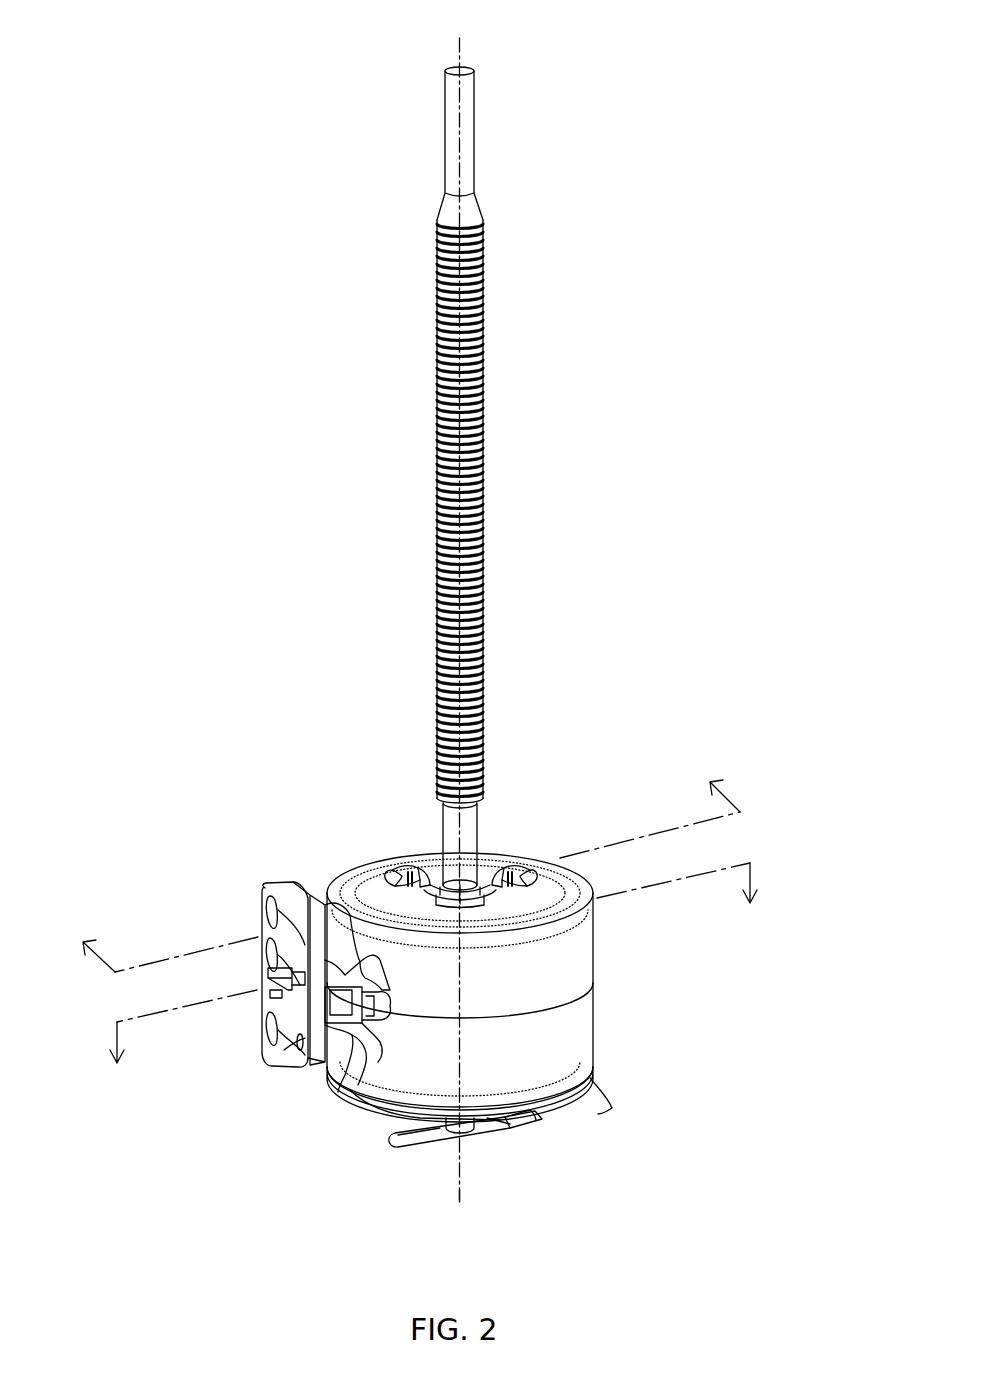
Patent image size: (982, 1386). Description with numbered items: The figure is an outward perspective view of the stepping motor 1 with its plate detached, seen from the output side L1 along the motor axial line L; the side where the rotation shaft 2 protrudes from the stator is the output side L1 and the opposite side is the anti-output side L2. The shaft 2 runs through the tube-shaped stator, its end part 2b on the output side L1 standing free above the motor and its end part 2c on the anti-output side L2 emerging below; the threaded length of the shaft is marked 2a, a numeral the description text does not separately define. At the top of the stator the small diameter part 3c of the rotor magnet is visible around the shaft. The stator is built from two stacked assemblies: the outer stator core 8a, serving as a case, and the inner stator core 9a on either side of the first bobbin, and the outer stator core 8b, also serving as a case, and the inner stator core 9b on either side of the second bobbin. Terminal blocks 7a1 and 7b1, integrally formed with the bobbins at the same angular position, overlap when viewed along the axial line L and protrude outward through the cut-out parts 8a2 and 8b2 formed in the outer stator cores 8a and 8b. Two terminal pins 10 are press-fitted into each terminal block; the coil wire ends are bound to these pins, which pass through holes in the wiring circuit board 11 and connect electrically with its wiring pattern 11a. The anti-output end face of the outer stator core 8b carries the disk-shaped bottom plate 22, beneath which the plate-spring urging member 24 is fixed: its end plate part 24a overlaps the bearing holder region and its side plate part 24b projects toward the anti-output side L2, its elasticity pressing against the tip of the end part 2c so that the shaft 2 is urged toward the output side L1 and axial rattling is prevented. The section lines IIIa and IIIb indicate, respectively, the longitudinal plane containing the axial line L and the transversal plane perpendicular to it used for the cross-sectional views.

The stepping motor 1 is at (249, 634).
The rotation shaft 2 is at (478, 832).
The threaded portion of shaft 2a is at (483, 510).
The end part on the output side 2b is at (474, 84).
The end part on the anti-output side 2c is at (470, 1135).
The small diameter part 3c is at (492, 875).
The terminal block 7a1 is at (328, 962).
The terminal block 7b1 is at (345, 1040).
The outer stator core 8a is at (588, 934).
The cut-out part 8a2 is at (360, 976).
The outer stator core 8b is at (588, 1017).
The cut-out part 8b2 is at (358, 1050).
The inner stator core 9a is at (384, 990).
The inner stator core 9b is at (372, 1060).
The terminal pin 10 is at (262, 970).
The wiring circuit board 11 is at (266, 882).
The wiring pattern 11a is at (284, 1050).
The bottom plate 22 is at (580, 1100).
The urging member 24 is at (398, 1150).
The end plate part 24a is at (536, 1120).
The side plate part 24b is at (408, 1140).
The motor axial line L is at (442, 857).
The output side L1 is at (459, 609).
The anti-output side L2 is at (462, 1207).
The IIIa-IIIa line IIIa is at (423, 886).
The IIIb-IIIb line IIIb is at (431, 959).